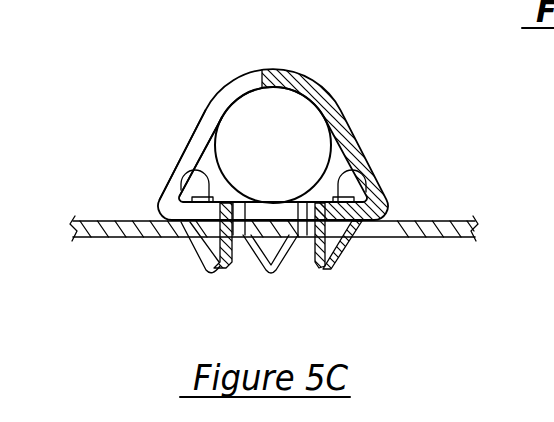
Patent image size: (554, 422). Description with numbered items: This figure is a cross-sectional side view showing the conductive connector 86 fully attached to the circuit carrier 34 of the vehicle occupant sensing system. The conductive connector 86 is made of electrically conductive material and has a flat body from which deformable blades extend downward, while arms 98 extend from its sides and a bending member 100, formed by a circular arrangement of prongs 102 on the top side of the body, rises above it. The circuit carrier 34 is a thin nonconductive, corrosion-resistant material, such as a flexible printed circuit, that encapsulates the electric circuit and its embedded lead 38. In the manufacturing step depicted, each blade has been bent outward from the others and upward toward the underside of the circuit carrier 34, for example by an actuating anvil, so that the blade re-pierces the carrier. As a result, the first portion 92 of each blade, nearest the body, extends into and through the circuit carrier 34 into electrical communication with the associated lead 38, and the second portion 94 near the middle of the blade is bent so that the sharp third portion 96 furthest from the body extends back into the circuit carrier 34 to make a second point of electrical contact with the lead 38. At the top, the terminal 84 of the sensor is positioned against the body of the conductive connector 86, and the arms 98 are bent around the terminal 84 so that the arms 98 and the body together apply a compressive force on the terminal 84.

The circuit carrier 34 is at (444, 228).
The lead 38 is at (249, 234).
The terminal 84 is at (290, 117).
The conductive connector 86 is at (215, 70).
The first portion 92 is at (317, 246).
The second portion 94 is at (326, 268).
The third portion 96 is at (350, 246).
The arm 98 is at (195, 135).
The bending member 100 is at (355, 167).
The prong 102 is at (200, 173).